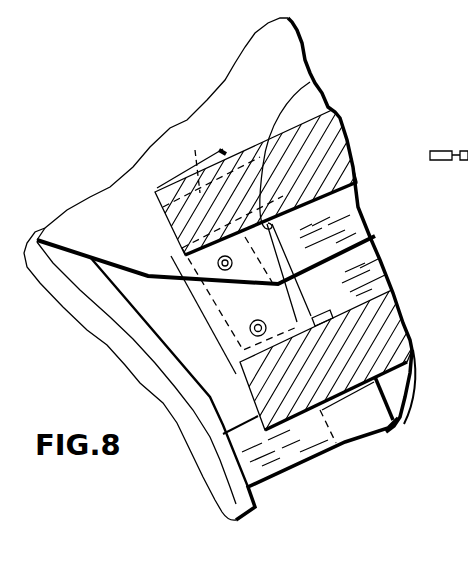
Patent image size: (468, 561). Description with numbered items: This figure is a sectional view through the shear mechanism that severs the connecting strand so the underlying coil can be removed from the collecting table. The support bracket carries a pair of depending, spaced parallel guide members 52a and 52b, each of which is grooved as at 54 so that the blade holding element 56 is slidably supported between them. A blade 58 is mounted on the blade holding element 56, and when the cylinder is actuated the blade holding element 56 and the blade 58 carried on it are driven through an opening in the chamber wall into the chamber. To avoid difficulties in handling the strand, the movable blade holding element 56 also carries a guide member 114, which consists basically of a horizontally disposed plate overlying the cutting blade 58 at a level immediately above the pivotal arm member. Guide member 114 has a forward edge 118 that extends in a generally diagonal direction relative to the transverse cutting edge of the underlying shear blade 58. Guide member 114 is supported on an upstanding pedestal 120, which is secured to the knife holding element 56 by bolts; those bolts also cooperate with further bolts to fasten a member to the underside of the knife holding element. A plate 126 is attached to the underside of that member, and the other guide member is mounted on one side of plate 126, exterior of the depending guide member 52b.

The guide member 114 is at (98, 222).
The forward edge 118 is at (110, 271).
The upstanding pedestal 120 is at (350, 212).
The plate 126 is at (405, 408).
The guide member 52a is at (229, 163).
The guide member 52b is at (403, 373).
The groove 54 is at (354, 404).
The blade holding element 56 is at (350, 182).
The blade 58 is at (197, 298).